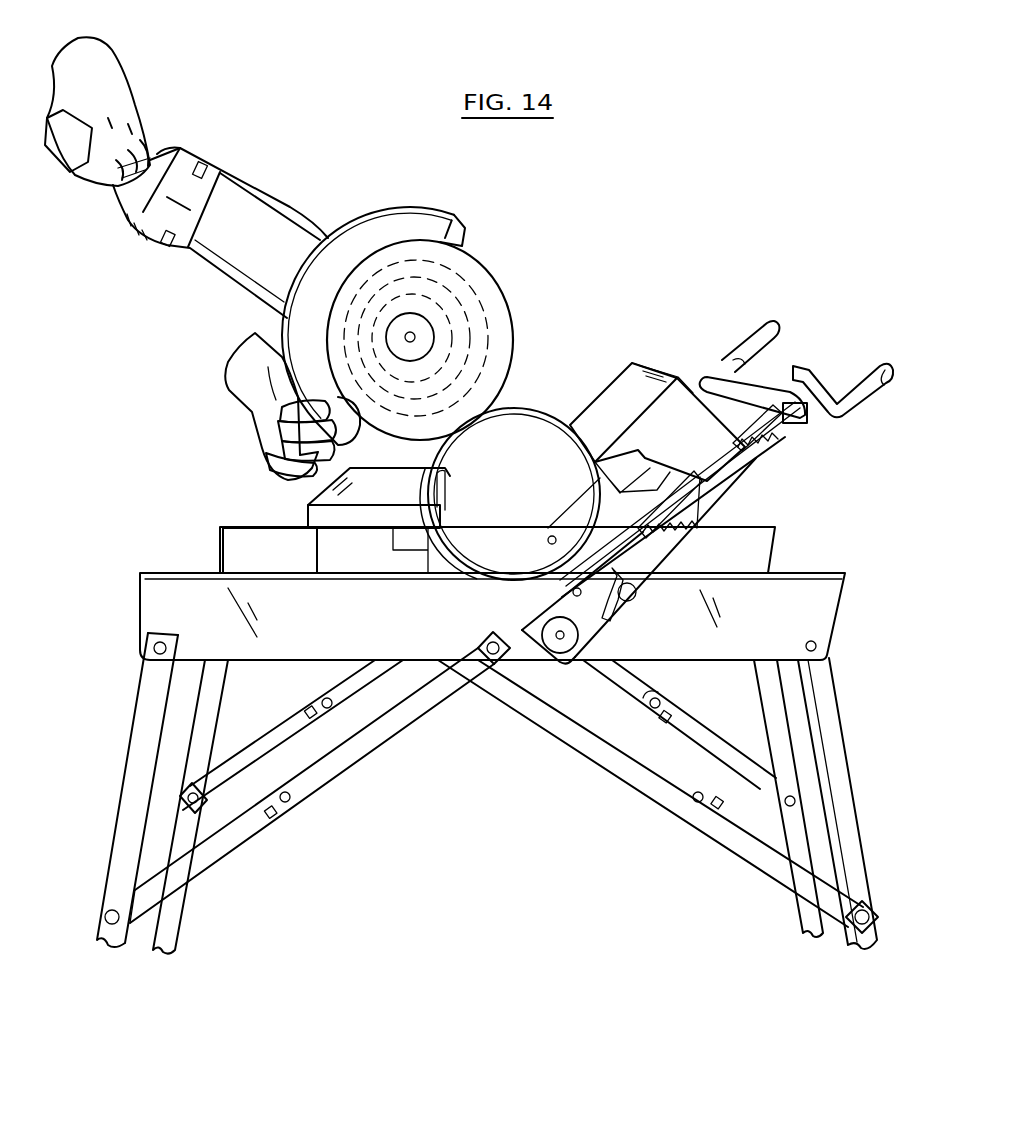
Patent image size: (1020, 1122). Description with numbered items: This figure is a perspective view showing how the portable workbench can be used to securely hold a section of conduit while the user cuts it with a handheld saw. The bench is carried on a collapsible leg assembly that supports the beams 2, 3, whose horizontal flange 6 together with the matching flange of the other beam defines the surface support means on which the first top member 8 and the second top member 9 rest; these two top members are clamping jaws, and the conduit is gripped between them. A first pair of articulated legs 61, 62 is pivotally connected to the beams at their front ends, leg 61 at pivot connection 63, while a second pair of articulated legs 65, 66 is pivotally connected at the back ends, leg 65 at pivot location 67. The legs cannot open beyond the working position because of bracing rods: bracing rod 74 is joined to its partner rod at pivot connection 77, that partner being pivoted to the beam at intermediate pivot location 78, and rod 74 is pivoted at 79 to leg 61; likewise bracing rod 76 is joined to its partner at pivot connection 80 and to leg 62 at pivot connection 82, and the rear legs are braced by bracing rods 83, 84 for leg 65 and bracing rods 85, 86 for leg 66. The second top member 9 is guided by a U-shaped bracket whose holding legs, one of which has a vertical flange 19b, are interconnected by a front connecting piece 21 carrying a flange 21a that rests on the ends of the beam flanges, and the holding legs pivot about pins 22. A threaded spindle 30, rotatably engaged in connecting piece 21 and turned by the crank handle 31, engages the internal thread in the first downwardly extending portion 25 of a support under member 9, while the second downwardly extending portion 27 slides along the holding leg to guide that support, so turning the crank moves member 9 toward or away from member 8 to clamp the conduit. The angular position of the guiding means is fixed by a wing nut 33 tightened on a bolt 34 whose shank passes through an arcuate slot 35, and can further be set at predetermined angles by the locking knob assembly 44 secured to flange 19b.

The beam 2 is at (770, 540).
The beam 3 is at (822, 605).
The horizontal flange 6 is at (820, 573).
The first top member 8 is at (340, 484).
The second top member 9 is at (622, 400).
The vertical flange 19b is at (697, 502).
The front connecting piece 21 is at (790, 425).
The flange 21a is at (758, 383).
The pin 22 is at (577, 600).
The first downwardly extending portion 25 is at (718, 460).
The second downwardly extending portion 27 is at (652, 495).
The threaded spindle 30 is at (753, 430).
The crank handle 31 is at (857, 383).
The wing nut 33 is at (637, 580).
The bolt 34 is at (636, 592).
The arcuate slot 35 is at (620, 592).
The locking knob assembly 44 is at (550, 640).
The articulated leg 61 is at (835, 778).
The articulated leg 62 is at (777, 730).
The pivot connection 63 is at (816, 648).
The articulated leg 65 is at (135, 770).
The articulated leg 66 is at (168, 922).
The pivot location 67 is at (152, 652).
The bracing rod 74 is at (775, 853).
The bracing rod 76 is at (753, 775).
The pivot connection 77 is at (698, 805).
The intermediate pivot location 78 is at (493, 660).
The pivot connection 79 is at (850, 925).
The pivot connection 80 is at (660, 704).
The pivot connection 82 is at (795, 801).
The bracing rod 83 is at (222, 848).
The bracing rod 84 is at (360, 745).
The bracing rod 85 is at (362, 680).
The bracing rod 86 is at (263, 750).